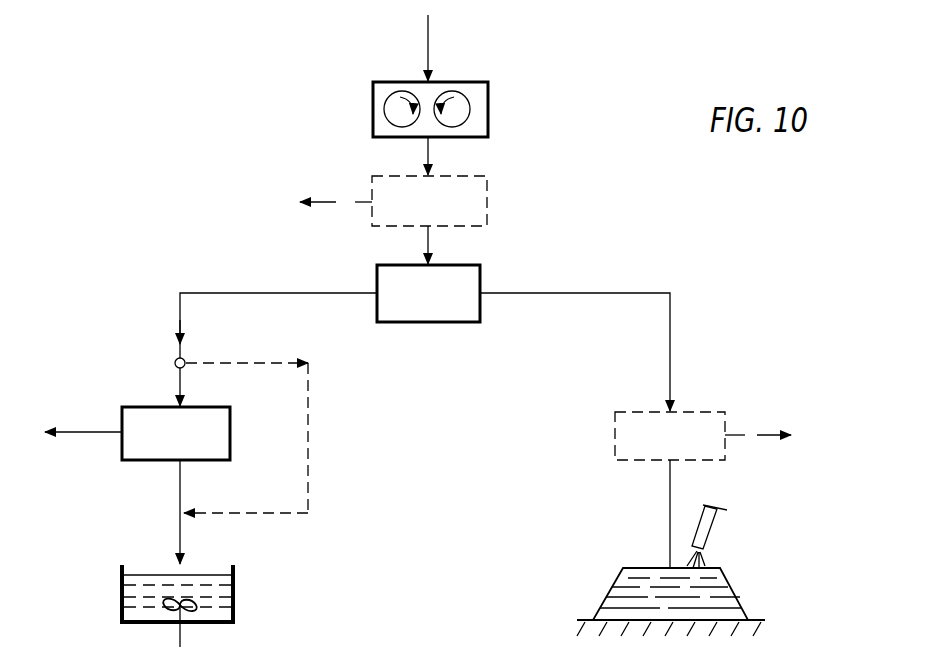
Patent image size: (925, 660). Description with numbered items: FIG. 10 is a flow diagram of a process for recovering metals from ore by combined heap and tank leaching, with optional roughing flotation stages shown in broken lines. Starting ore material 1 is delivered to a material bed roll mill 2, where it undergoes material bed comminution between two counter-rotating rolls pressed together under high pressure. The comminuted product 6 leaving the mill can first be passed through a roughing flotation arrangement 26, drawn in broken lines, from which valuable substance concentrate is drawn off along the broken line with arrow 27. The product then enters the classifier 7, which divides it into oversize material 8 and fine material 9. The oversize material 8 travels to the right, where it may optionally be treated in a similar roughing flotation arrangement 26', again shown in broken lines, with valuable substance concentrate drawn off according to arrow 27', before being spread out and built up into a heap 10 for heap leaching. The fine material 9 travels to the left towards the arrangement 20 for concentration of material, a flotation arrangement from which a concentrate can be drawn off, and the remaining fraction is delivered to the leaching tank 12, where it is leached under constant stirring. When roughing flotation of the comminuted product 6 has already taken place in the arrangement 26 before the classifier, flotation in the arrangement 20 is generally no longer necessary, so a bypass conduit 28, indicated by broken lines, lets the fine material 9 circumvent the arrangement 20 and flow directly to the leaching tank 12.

The starting ore material 1 is at (430, 33).
The material bed roll mill 2 is at (493, 100).
The comminuted product 6 is at (430, 152).
The roughing flotation arrangement 26 is at (475, 201).
The valuable substance concentrate arrow 27 is at (336, 180).
The classifier 7 is at (485, 276).
The fine material 9 is at (222, 292).
The oversize material 8 is at (672, 333).
The bypass conduit 28 is at (310, 397).
The arrangement for concentration of material 20 is at (235, 446).
The leaching tank 12 is at (238, 598).
The roughing flotation arrangement 26' is at (638, 436).
The valuable substance concentrate arrow 27' is at (759, 411).
The heap 10 is at (731, 577).